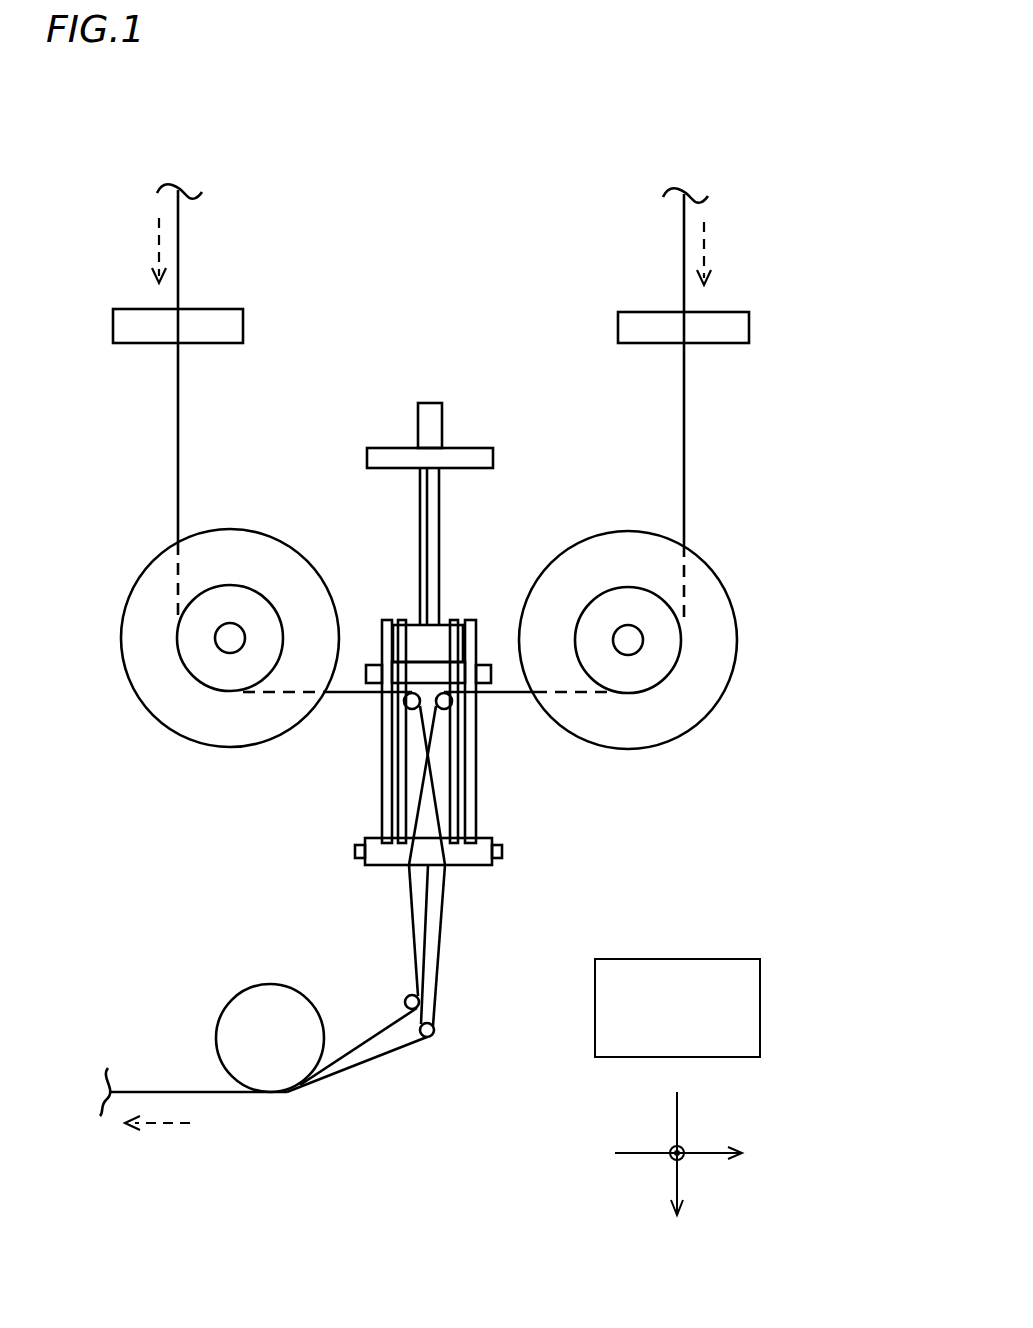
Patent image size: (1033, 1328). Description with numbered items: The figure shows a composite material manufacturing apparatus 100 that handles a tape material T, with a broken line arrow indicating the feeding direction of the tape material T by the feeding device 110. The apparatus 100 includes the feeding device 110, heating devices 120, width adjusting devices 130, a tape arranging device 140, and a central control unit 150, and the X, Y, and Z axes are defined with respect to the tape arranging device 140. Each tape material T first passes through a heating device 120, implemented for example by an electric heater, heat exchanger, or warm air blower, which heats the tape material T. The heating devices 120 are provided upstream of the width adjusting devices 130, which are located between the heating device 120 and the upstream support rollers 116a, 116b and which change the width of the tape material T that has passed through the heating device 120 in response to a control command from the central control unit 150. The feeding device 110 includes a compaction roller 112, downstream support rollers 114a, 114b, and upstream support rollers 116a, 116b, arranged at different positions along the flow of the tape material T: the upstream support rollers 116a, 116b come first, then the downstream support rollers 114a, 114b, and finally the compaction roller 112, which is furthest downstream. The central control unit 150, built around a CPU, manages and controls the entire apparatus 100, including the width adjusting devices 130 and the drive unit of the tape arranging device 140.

The composite material manufacturing apparatus 100 is at (194, 102).
The tape material T is at (182, 252).
The feeding device 110 is at (399, 892).
The compaction roller 112 is at (266, 985).
The downstream support roller 114a is at (405, 1001).
The downstream support roller 114b is at (434, 1031).
The upstream support roller 116a is at (404, 710).
The upstream support roller 116b is at (452, 710).
The heating device 120 is at (243, 322).
The width adjusting device 130 is at (237, 530).
The tape arranging device 140 is at (466, 874).
The central control unit 150 is at (630, 958).